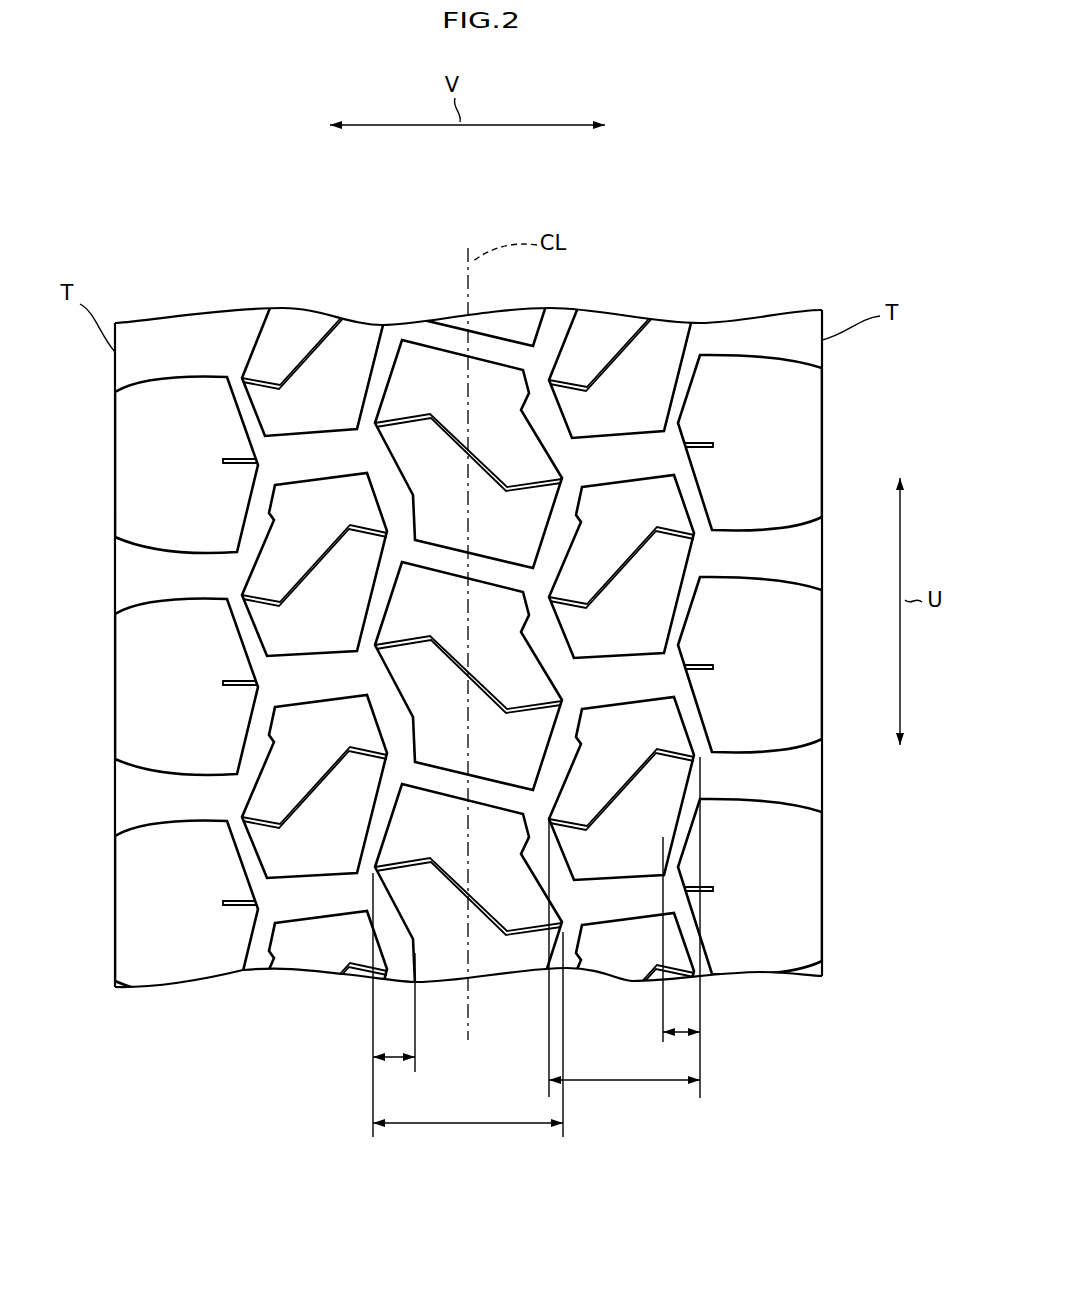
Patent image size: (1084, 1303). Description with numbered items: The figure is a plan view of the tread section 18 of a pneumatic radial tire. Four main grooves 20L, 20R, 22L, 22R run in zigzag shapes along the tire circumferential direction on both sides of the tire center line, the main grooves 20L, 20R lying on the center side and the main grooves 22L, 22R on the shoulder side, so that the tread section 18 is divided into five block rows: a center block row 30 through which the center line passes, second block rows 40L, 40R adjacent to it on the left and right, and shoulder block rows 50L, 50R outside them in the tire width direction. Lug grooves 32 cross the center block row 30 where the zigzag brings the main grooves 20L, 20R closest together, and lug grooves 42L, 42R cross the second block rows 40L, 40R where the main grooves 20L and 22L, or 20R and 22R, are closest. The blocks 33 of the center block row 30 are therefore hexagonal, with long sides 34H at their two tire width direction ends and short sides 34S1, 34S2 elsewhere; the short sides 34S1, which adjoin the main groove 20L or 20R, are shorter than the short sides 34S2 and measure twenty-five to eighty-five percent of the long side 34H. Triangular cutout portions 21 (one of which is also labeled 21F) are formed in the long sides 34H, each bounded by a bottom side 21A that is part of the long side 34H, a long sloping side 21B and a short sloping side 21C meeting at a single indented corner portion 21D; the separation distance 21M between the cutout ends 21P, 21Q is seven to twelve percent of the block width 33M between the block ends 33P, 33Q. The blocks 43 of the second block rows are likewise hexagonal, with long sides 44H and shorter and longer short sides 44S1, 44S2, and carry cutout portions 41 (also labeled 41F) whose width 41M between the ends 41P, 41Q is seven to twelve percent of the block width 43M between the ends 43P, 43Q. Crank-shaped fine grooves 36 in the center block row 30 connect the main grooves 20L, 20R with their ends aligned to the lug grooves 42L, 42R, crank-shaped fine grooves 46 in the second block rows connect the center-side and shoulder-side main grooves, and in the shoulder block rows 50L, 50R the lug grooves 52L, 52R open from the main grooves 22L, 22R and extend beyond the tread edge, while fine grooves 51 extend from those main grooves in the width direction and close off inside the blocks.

The tread section 18 is at (858, 216).
The main groove 20L is at (386, 324).
The main groove 20R is at (556, 318).
The cutout portion 21 is at (534, 412).
The bottom side 21A is at (408, 495).
The long sloping side 21B is at (402, 473).
The short sloping side 21C is at (413, 495).
The corner portion 21D is at (410, 558).
The groove wall face 21F is at (475, 682).
The tire width direction separation distance 21M is at (373, 1053).
The one side tire width direction end 21P is at (373, 873).
The other tire width direction end 21Q is at (414, 942).
The main groove 22L is at (254, 318).
The main groove 22R is at (706, 320).
The center block row 30 is at (468, 565).
The lug groove 32 is at (443, 553).
The block 33 is at (393, 335).
The tire width direction separation distance 33M is at (460, 1123).
The one side tire width direction end 33P is at (238, 1017).
The other side tire width direction end 33Q is at (567, 920).
The long side 34H is at (392, 465).
The short side 34S1 is at (360, 618).
The short side 34S2 is at (497, 573).
The fine groove 36 is at (404, 414).
The second block row 40L is at (468, 612).
The second block row 40R is at (621, 317).
The cutout portion 41 is at (260, 743).
The intermediate block wall face 41F is at (241, 803).
The tire width direction separation distance 41M is at (690, 1032).
The one side tire width direction end 41P is at (665, 832).
The other tire width direction side end 41Q is at (713, 753).
The lug groove 42L is at (300, 446).
The lug groove 42R is at (645, 448).
The block 43 is at (263, 412).
The tire width direction separation distance 43M is at (620, 1080).
The one side tire width direction end 43P is at (532, 800).
The other side tire width direction end 43Q is at (875, 793).
The long side 44H is at (250, 773).
The short side 44S1 is at (712, 730).
The short side 44S2 is at (708, 640).
The fine groove 46 is at (317, 773).
The shoulder block row 50L is at (158, 265).
The shoulder block row 50R is at (760, 270).
The fine groove 51 is at (233, 467).
The lug groove 52L is at (130, 573).
The lug groove 52R is at (800, 552).